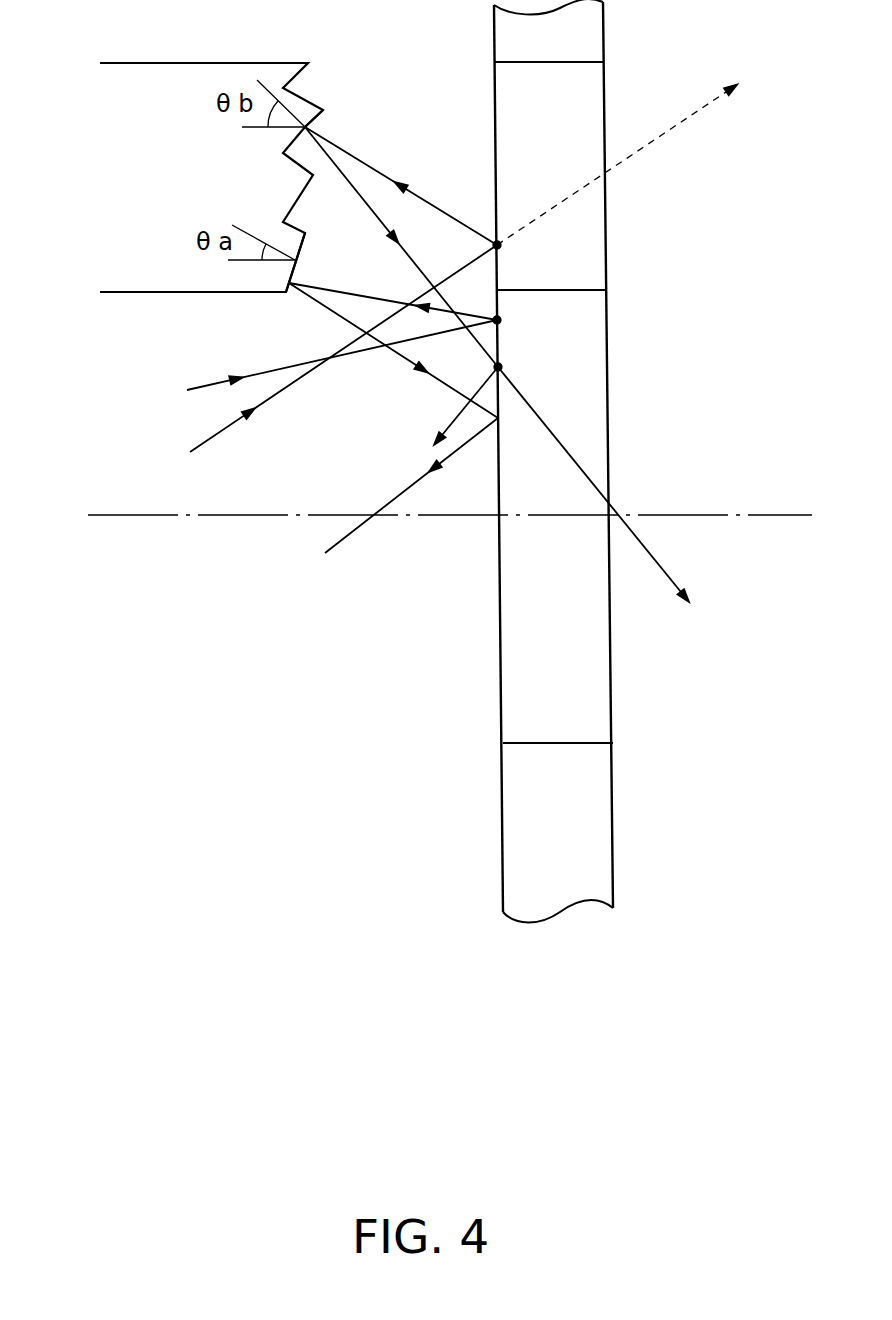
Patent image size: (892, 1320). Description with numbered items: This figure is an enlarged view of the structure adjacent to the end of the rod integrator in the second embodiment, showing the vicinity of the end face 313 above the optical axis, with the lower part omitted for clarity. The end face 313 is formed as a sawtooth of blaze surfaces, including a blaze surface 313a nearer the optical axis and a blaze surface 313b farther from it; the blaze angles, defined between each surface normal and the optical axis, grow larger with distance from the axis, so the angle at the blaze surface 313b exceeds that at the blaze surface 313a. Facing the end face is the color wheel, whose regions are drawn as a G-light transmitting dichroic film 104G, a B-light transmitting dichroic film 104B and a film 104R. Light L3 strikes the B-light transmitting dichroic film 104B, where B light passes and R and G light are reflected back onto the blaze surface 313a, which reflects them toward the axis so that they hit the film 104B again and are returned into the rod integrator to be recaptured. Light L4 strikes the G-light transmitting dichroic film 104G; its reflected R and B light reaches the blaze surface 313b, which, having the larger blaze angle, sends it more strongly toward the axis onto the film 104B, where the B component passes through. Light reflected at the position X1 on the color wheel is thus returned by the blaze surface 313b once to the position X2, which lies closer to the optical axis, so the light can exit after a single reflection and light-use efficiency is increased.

The end face 313 is at (305, 73).
The blaze surface 313a is at (303, 250).
The blaze surface 313b is at (320, 117).
The G-light transmitting dichroic film 104G is at (605, 97).
The B-light transmitting dichroic film 104B is at (608, 306).
The R-light transmitting dichroic film 104R is at (613, 670).
The position X1 is at (500, 245).
The position X2 is at (500, 367).
The light L3 is at (205, 382).
The light L4 is at (205, 440).